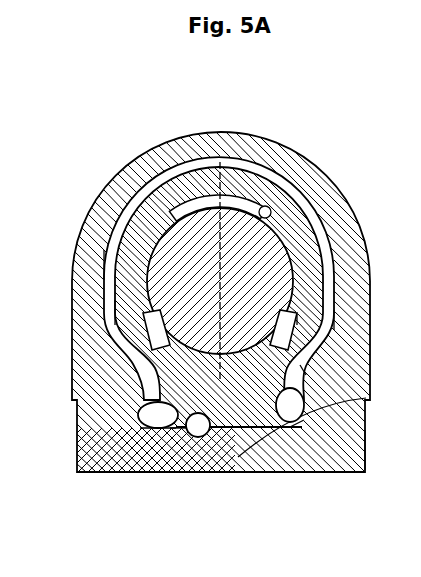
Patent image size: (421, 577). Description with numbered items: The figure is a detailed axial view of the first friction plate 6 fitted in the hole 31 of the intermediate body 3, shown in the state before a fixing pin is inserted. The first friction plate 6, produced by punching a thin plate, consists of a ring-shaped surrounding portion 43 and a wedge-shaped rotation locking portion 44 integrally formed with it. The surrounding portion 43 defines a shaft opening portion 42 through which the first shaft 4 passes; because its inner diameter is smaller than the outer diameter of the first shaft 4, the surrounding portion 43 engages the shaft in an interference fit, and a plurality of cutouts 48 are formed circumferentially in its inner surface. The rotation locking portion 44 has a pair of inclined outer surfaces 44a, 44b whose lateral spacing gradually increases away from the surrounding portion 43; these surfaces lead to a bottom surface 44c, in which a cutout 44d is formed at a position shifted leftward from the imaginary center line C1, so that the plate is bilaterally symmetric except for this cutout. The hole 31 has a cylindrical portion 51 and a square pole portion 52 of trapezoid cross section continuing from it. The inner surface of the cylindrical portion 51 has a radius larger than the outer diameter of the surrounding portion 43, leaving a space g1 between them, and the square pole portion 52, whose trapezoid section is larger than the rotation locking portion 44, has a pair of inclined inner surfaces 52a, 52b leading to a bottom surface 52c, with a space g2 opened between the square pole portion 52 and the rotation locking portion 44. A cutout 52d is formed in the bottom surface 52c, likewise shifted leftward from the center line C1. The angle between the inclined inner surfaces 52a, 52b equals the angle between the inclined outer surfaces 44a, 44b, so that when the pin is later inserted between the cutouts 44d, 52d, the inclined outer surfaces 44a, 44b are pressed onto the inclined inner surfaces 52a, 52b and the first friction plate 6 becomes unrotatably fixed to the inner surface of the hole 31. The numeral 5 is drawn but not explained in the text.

The intermediate body 3 is at (262, 134).
The first shaft 4 is at (342, 226).
The base member 5 is at (372, 446).
The first friction plate 6 is at (200, 163).
The hole 31 is at (295, 158).
The shaft opening portion 42 is at (108, 268).
The surrounding portion 43 is at (110, 316).
The rotation locking portion 44 is at (142, 398).
The inclined outer surface 44a is at (148, 424).
The inclined outer surface 44b is at (300, 426).
The bottom surface 44c is at (277, 432).
The cutout 44d is at (180, 432).
The cutouts 48 is at (268, 212).
The cylindrical portion 51 is at (334, 322).
The square pole portion 52 is at (326, 447).
The inclined inner surface 52a is at (138, 414).
The inclined inner surface 52b is at (304, 400).
The bottom surface 52c is at (229, 431).
The cutout 52d is at (205, 437).
The space g1 is at (300, 322).
The space g2 is at (305, 376).
The imaginary center line C1 is at (231, 160).